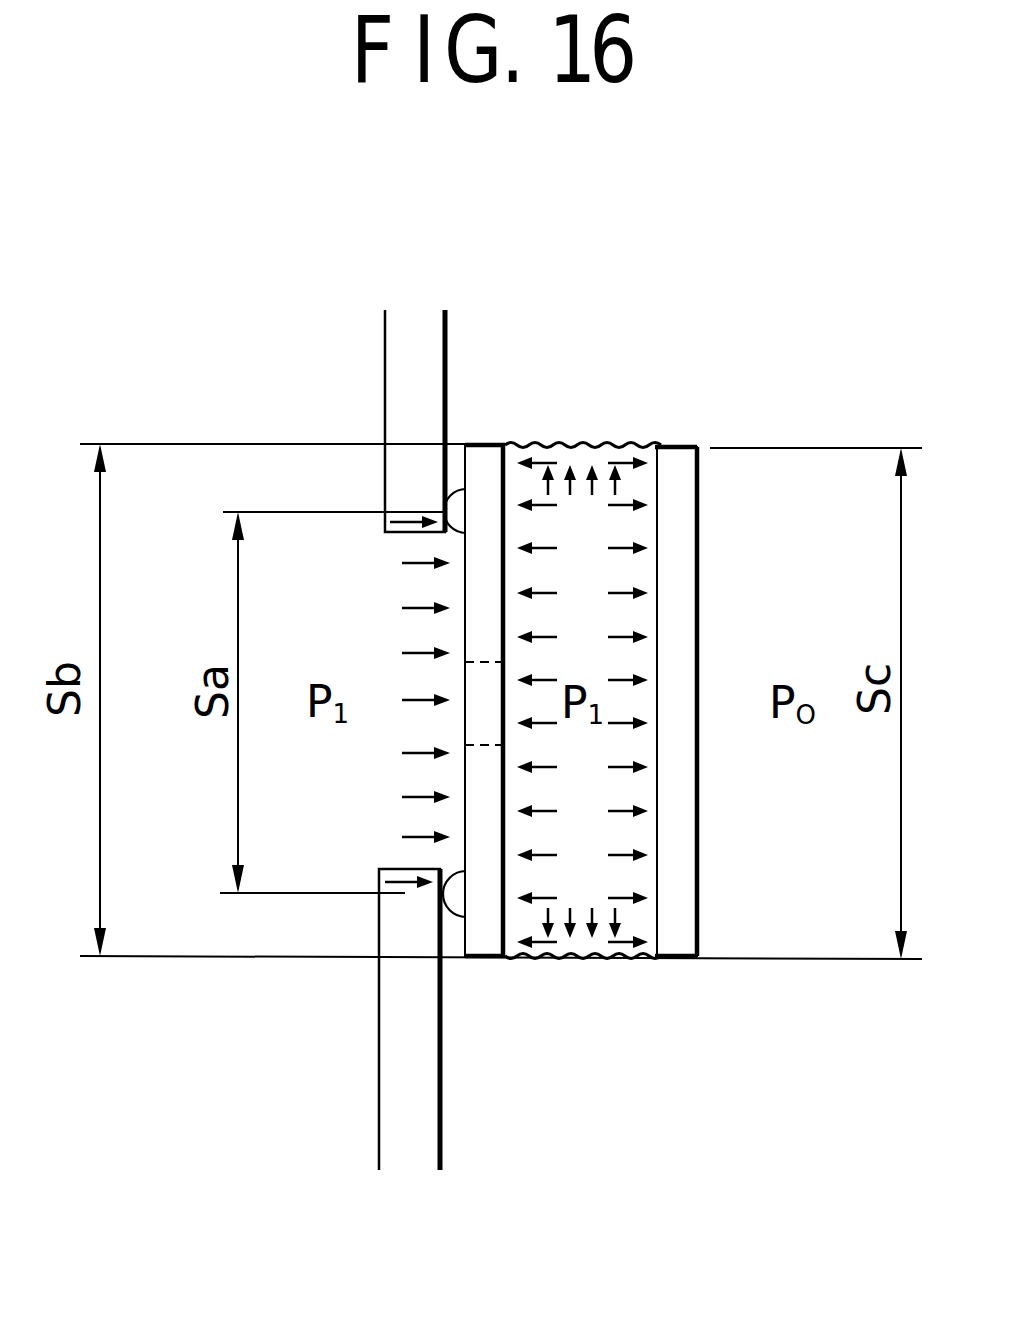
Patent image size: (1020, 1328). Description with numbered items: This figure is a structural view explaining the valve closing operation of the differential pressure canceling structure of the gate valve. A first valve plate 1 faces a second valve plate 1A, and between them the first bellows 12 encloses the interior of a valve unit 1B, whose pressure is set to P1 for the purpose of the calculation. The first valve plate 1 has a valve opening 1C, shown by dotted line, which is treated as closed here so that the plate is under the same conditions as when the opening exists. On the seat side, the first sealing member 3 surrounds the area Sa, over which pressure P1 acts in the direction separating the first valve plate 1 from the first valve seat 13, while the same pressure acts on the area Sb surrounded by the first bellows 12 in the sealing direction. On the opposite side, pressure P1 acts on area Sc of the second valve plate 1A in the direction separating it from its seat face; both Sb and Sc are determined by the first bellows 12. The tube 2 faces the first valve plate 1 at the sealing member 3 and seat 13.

The first valve plate 1 is at (422, 771).
The second valve plate 1A is at (672, 963).
The valve unit 1B is at (571, 699).
The valve opening 1C is at (478, 717).
The pressure introducing tube 2 is at (410, 353).
The first sealing member 3 is at (458, 503).
The first bellows 12 is at (578, 444).
The first valve seat 13 is at (438, 900).